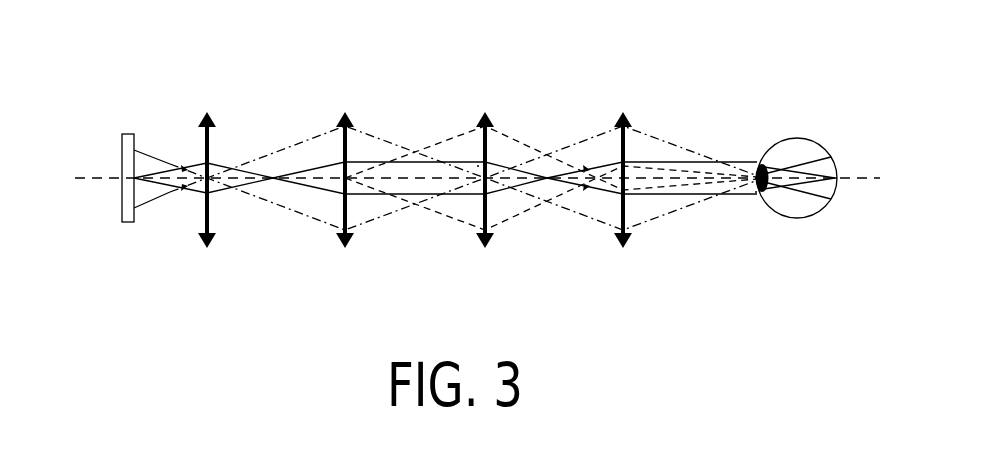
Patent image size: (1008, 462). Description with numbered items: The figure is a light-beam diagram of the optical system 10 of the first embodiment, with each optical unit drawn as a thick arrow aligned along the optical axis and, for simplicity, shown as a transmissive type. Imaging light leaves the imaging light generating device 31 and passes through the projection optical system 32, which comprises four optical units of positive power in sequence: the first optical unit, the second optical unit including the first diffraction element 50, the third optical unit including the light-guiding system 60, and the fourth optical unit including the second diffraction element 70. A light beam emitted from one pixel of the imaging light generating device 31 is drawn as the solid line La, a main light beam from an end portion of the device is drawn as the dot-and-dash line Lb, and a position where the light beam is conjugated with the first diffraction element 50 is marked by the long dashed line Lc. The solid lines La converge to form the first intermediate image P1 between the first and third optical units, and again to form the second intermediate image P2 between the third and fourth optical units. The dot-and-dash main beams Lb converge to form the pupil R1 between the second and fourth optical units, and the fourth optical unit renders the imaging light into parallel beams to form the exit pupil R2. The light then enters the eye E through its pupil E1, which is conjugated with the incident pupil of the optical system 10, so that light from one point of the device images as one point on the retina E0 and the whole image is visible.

The optical system 10 is at (706, 64).
The imaging light generating device 31 is at (122, 150).
The projection optical system 32 is at (211, 211).
The first diffraction element 50 is at (348, 211).
The light-guiding system 60 is at (488, 211).
The second diffraction element 70 is at (628, 211).
The solid line La is at (218, 163).
The dot-and-dash line Lb is at (392, 142).
The long dashed line Lc is at (505, 140).
The first intermediate image P1 is at (275, 178).
The second intermediate image P2 is at (549, 178).
The pupil R1 is at (476, 166).
The exit pupil R2 is at (755, 193).
The eye E is at (795, 139).
The pupil of the eye E1 is at (754, 163).
The retina E0 is at (836, 172).